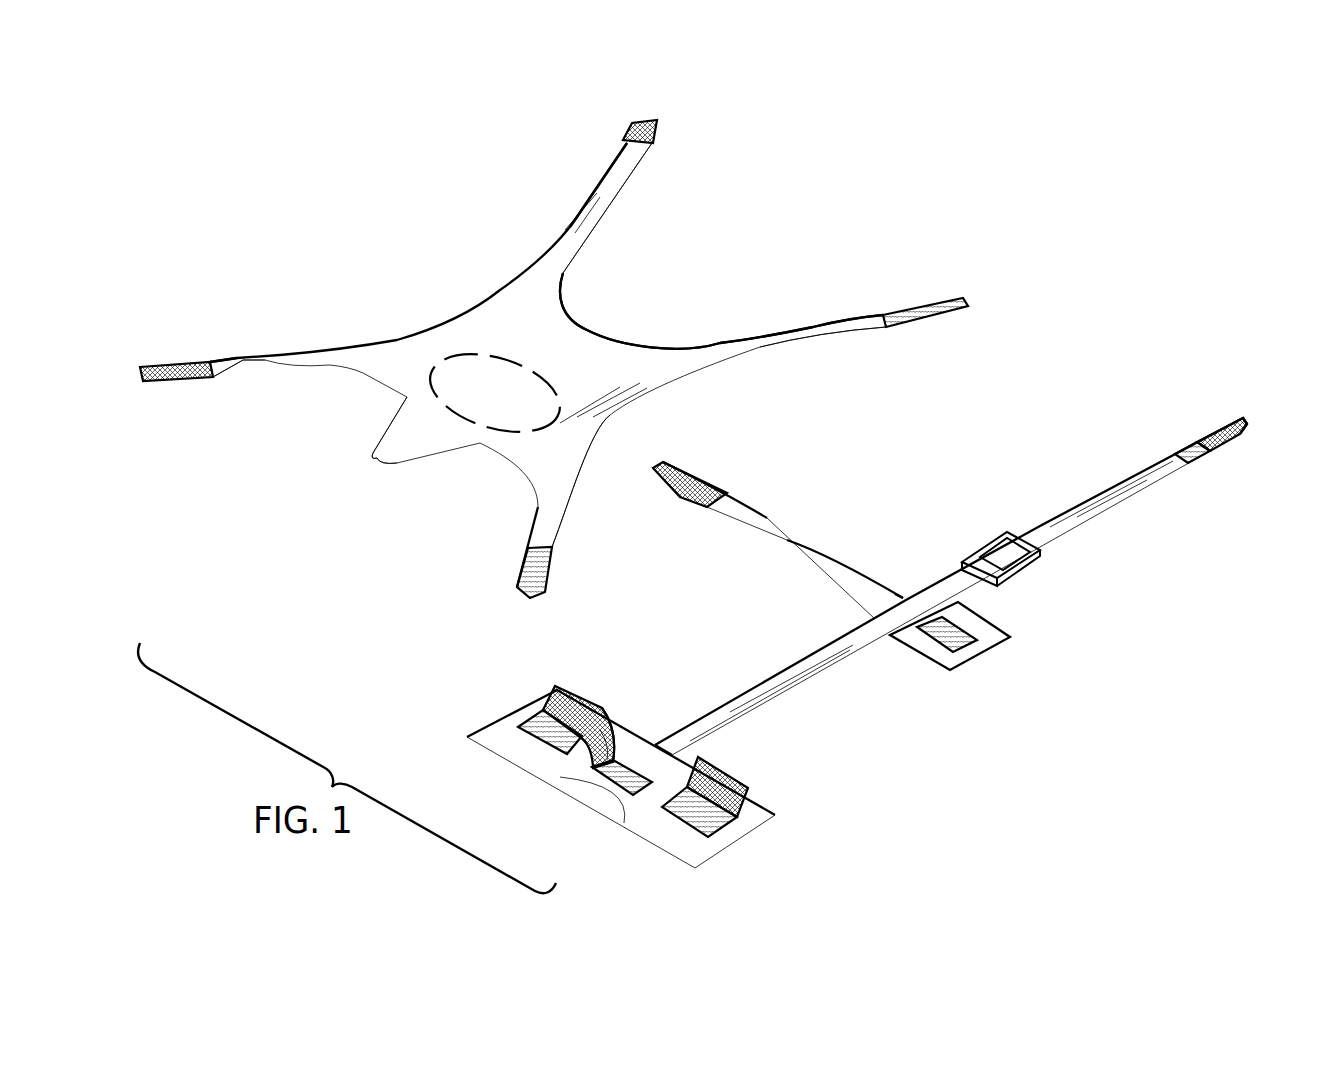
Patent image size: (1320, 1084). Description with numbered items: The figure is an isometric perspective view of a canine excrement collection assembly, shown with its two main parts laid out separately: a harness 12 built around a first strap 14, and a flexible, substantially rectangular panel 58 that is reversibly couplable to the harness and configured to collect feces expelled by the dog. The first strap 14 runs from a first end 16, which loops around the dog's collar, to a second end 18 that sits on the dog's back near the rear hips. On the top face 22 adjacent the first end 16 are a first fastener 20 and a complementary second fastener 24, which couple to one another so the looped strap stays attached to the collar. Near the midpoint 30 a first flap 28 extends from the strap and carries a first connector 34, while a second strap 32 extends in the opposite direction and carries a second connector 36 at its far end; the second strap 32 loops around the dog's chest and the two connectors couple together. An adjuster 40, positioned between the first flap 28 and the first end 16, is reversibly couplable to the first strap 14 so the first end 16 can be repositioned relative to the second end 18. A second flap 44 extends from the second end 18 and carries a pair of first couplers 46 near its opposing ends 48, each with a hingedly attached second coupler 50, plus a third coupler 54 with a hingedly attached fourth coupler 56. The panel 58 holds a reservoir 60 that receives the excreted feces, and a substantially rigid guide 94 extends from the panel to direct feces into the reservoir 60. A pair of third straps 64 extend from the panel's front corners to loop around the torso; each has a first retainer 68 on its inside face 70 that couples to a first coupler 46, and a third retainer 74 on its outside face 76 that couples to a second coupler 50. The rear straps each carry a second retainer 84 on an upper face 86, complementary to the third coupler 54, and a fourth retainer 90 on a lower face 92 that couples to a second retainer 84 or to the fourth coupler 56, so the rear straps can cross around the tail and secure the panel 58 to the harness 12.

The harness 12 is at (791, 700).
The first strap 14 is at (1097, 497).
The first end 16 is at (1248, 412).
The second end 18 is at (673, 737).
The first fastener 20 is at (1220, 418).
The top face 22 is at (1149, 486).
The second fastener 24 is at (1186, 436).
The first flap 28 is at (992, 669).
The midpoint 30 is at (909, 596).
The second strap 32 is at (861, 574).
The first connector 34 is at (972, 631).
The second connector 36 is at (691, 474).
The adjuster 40 is at (1013, 531).
The second flap 44 is at (700, 853).
The first couplers 46 is at (540, 721).
The opposing ends 48 is at (752, 842).
The second couplers 50 is at (555, 680).
The third coupler 54 is at (611, 787).
The fourth coupler 56 is at (584, 754).
The panel 58 is at (530, 298).
The reservoir 60 is at (485, 375).
The third straps 64 is at (706, 344).
The first retainers 68 is at (658, 134).
The inside face 70 is at (610, 166).
The third retainers 74 is at (930, 330).
The outside face 76 is at (850, 333).
The second retainers 84 is at (551, 575).
The upper face 86 is at (556, 514).
The fourth retainers 90 is at (175, 382).
The lower face 92 is at (231, 382).
The guide 94 is at (396, 445).